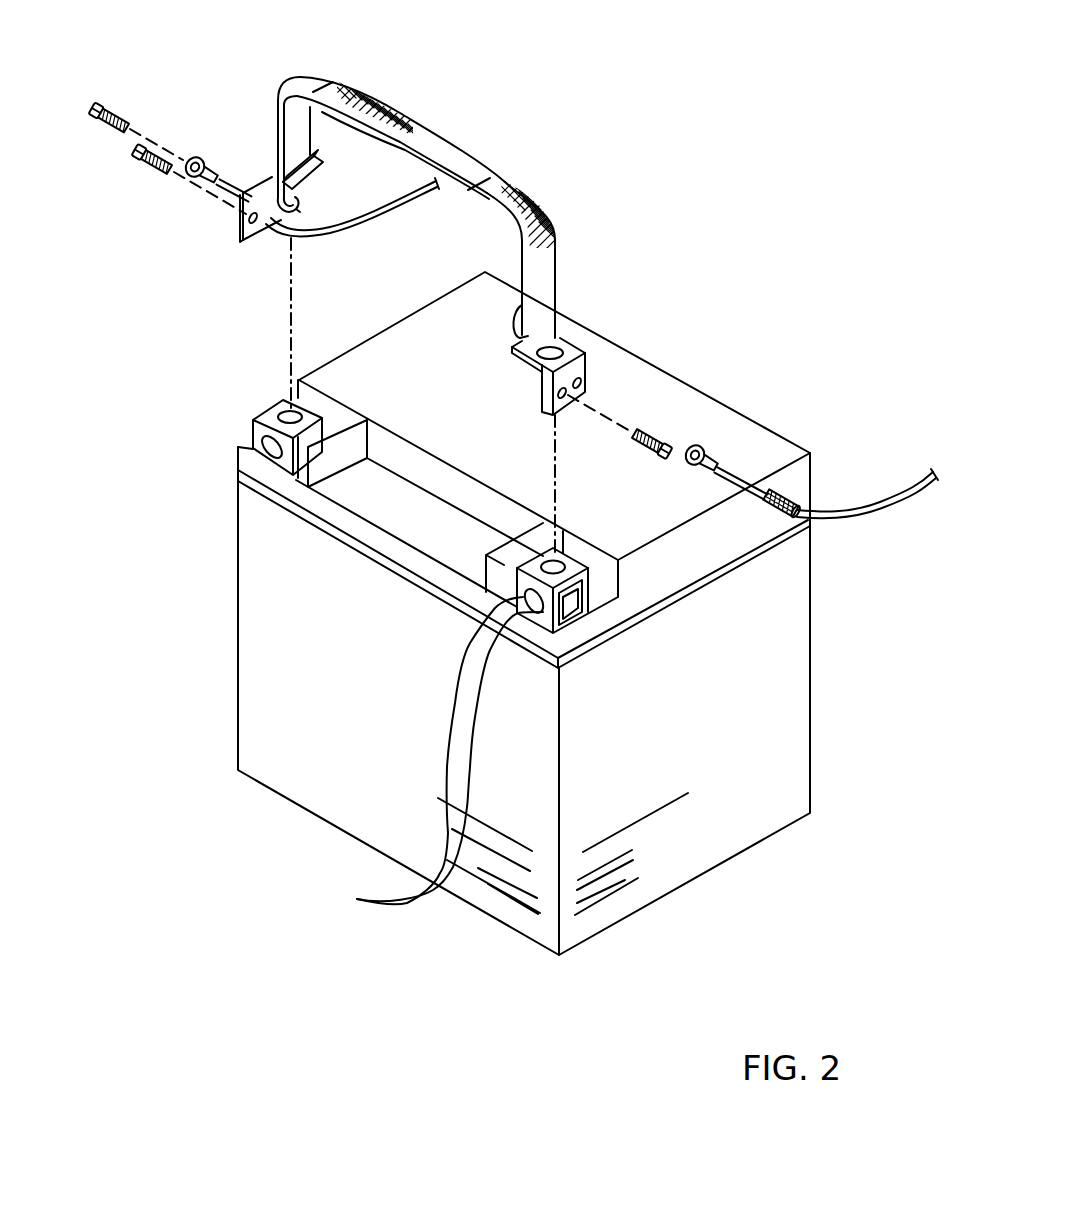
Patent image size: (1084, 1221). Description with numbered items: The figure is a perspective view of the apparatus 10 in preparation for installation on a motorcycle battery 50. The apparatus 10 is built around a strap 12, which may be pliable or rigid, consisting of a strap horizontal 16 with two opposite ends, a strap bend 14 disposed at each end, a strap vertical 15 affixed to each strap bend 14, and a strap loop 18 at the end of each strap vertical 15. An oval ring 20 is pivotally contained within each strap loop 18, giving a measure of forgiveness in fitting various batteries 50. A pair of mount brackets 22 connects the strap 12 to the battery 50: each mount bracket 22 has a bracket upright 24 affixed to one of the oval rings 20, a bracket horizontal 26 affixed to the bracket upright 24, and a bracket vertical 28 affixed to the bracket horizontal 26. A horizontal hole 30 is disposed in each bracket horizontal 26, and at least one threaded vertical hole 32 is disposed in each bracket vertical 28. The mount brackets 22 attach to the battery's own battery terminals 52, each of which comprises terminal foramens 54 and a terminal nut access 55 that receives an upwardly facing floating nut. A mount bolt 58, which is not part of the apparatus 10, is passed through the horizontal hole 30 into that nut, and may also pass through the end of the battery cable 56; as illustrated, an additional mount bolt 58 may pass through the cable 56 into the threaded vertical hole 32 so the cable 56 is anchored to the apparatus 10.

The apparatus 10 is at (541, 103).
The strap 12 is at (579, 200).
The strap bend 14 is at (330, 84).
The strap vertical 15 is at (277, 120).
The strap horizontal 16 is at (457, 147).
The strap loop 18 is at (318, 163).
The oval ring 20 is at (267, 187).
The mount bracket 22 is at (265, 250).
The bracket upright 24 is at (292, 212).
The bracket horizontal 26 is at (587, 348).
The bracket vertical 28 is at (240, 222).
The horizontal hole 30 is at (553, 350).
The threaded vertical hole 32 is at (566, 391).
The battery 50 is at (808, 589).
The battery terminal 52 is at (252, 463).
The terminal foramen 54 is at (290, 413).
The terminal nut access 55 is at (583, 598).
The battery cable 56 is at (380, 222).
The mount bolt 58 is at (145, 160).